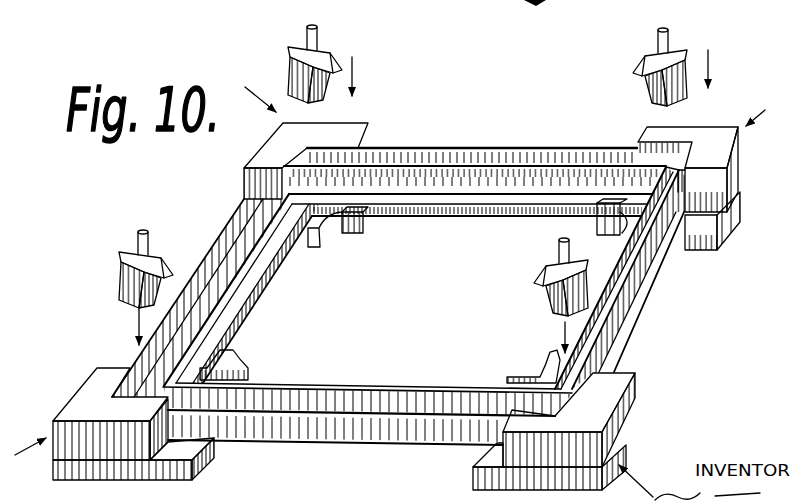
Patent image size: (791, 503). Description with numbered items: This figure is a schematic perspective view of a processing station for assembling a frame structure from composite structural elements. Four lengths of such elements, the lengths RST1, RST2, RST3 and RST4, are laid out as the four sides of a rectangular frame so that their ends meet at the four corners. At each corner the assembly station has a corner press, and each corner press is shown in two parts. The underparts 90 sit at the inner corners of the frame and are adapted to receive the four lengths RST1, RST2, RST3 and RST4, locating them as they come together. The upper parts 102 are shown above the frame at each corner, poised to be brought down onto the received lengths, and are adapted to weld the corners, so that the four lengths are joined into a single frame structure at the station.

The upper parts 102 is at (322, 98).
The underparts 90 is at (340, 233).
The length RST1 is at (479, 153).
The length RST2 is at (257, 234).
The length RST3 is at (350, 403).
The length RST4 is at (617, 297).